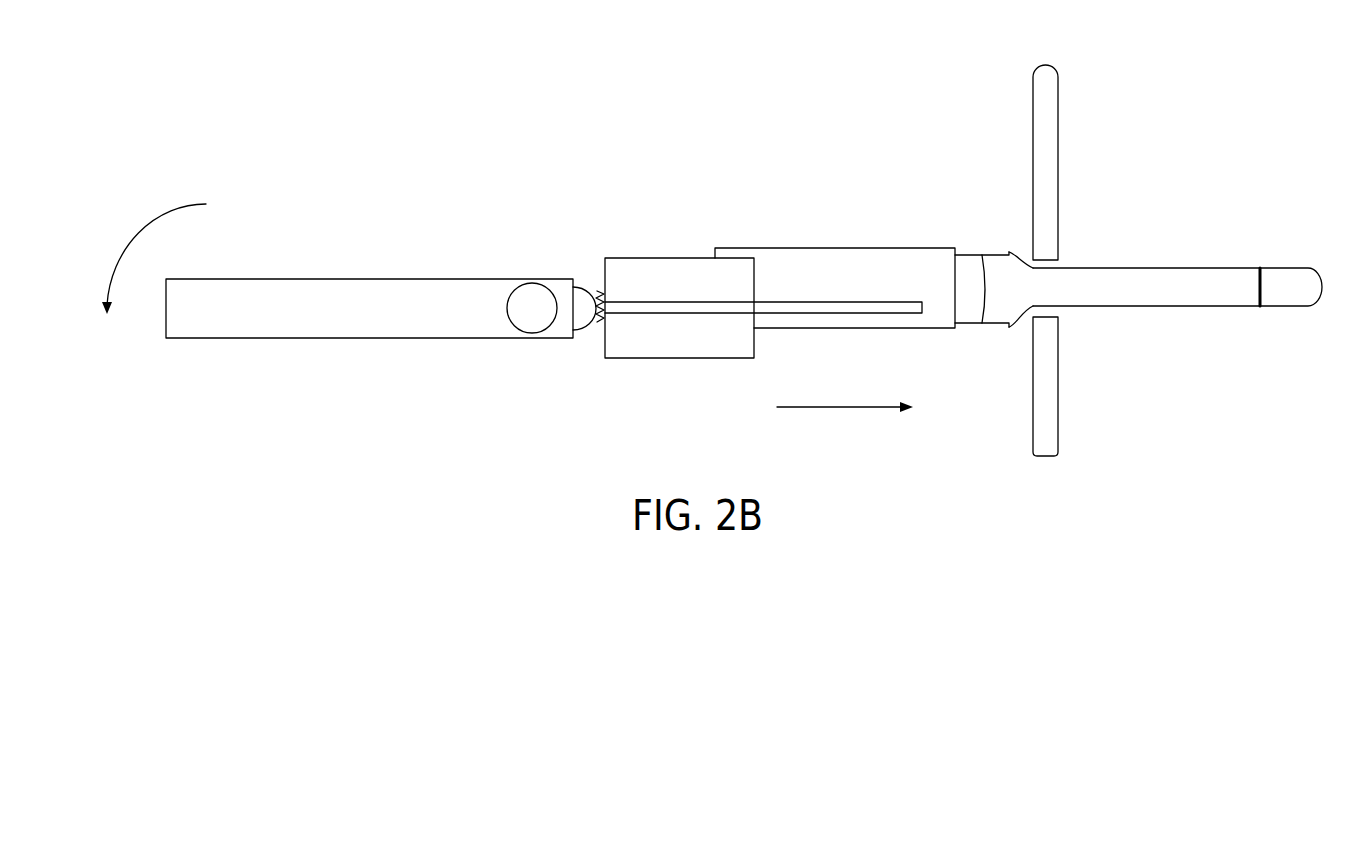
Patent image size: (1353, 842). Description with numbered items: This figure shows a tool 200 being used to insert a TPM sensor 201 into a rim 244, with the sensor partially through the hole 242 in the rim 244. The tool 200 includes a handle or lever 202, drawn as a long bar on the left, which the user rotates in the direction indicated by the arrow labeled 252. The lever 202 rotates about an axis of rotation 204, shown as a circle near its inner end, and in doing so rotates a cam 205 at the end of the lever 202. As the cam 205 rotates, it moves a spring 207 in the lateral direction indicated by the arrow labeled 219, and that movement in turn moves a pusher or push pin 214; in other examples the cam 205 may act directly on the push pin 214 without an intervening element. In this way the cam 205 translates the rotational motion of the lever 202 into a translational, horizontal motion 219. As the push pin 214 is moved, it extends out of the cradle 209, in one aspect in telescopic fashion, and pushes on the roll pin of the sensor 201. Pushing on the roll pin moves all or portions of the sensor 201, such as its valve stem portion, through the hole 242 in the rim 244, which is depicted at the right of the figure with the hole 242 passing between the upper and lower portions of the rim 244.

The tool 200 is at (230, 124).
The TPM sensor 201 is at (942, 247).
The handle or lever 202 is at (314, 340).
The axis of rotation 204 is at (532, 283).
The cam 205 is at (584, 322).
The spring 207 is at (600, 298).
The cradle 209 is at (680, 359).
The push pin 214 is at (838, 301).
The direction of movement 219 is at (845, 409).
The hole in the rim 242 is at (1069, 256).
The rim 244 is at (1058, 170).
The direction of lever rotation 252 is at (162, 212).